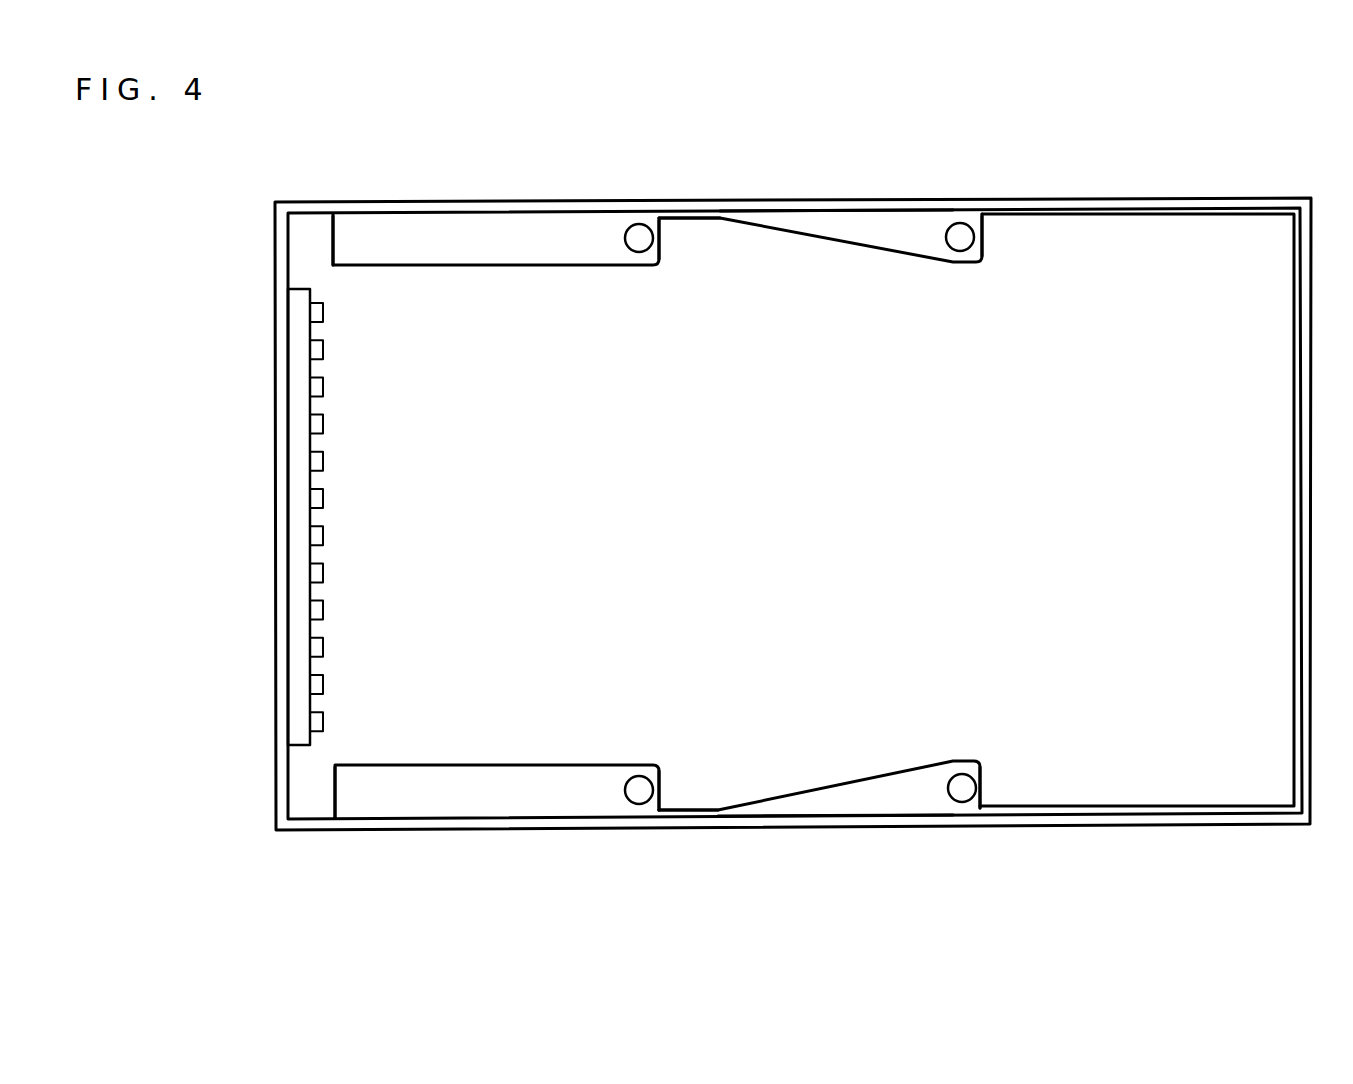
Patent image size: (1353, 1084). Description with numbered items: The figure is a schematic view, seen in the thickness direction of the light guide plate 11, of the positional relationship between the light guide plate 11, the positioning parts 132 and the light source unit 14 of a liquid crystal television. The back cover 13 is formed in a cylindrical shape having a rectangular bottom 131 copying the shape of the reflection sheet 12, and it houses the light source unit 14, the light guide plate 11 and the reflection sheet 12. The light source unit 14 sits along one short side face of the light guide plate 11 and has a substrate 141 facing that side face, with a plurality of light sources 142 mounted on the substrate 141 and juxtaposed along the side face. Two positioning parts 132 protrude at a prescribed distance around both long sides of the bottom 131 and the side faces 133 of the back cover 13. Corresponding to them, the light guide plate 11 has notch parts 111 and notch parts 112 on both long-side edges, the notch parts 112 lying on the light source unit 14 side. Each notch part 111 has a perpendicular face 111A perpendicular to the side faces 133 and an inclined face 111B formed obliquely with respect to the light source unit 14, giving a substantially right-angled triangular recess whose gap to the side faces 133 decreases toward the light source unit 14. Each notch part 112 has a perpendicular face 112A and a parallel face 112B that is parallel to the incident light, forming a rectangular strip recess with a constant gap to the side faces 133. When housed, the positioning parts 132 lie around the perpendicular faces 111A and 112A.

The light guide plate 11 is at (813, 516).
The notch part 111 is at (872, 516).
The perpendicular face 111A is at (1000, 235).
The inclined face 111B is at (795, 232).
The notch part 112 is at (548, 515).
The perpendicular face 112A is at (690, 222).
The parallel face 112B is at (384, 266).
The reflection sheet 12 is at (1203, 242).
The back cover 13 is at (1116, 199).
The bottom 131 is at (852, 225).
The positioning part 132 is at (639, 224).
The side face 133 is at (500, 216).
The light source unit 14 is at (245, 465).
The substrate 141 is at (299, 745).
The light source 142 is at (310, 647).